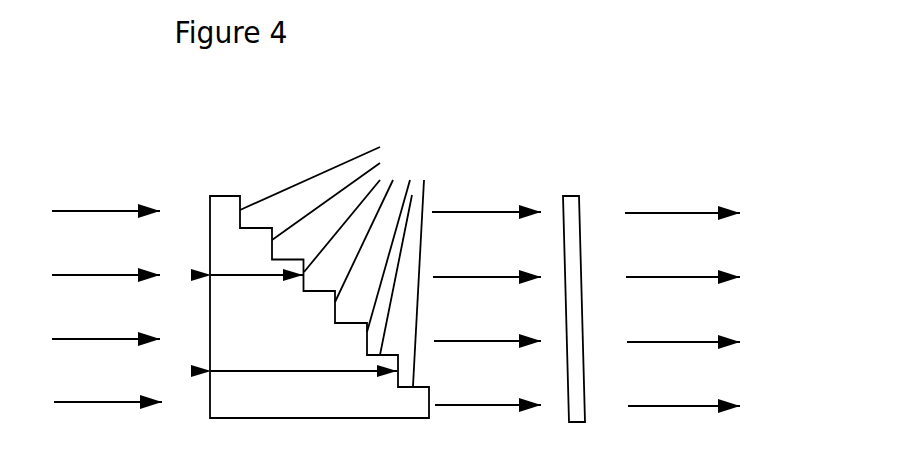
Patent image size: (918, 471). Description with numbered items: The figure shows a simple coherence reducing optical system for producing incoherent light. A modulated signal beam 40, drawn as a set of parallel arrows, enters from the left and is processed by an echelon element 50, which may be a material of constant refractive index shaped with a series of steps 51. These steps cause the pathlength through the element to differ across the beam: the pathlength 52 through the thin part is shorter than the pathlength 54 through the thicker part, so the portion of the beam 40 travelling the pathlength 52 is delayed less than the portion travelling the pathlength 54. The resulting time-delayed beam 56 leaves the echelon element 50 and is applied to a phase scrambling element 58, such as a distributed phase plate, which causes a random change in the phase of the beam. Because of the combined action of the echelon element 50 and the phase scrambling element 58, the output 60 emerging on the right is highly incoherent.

The modulated signal beam 40 is at (107, 306).
The echelon element 50 is at (241, 245).
The steps 51 is at (335, 258).
The pathlength 52 is at (254, 275).
The pathlength 54 is at (275, 370).
The time-delayed beam 56 is at (486, 308).
The phase scrambling element 58 is at (581, 207).
The output 60 is at (682, 309).